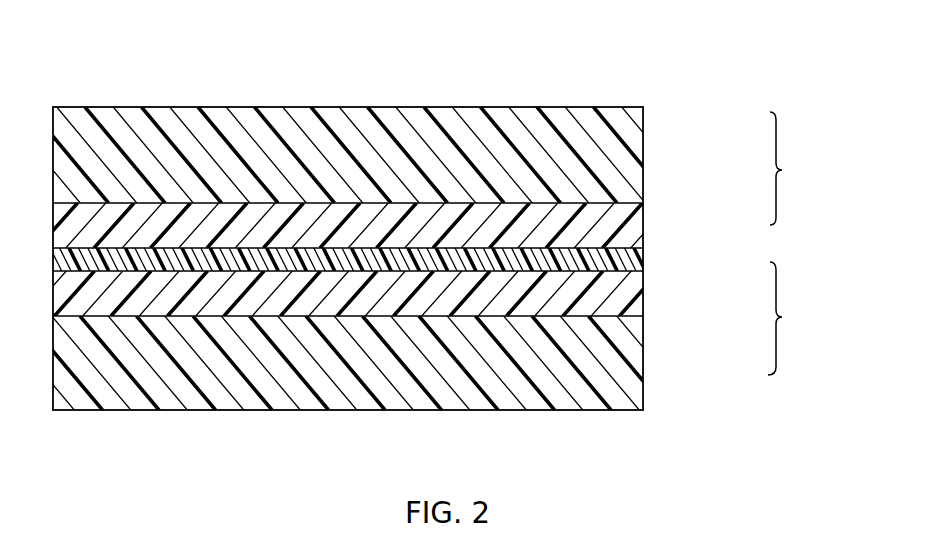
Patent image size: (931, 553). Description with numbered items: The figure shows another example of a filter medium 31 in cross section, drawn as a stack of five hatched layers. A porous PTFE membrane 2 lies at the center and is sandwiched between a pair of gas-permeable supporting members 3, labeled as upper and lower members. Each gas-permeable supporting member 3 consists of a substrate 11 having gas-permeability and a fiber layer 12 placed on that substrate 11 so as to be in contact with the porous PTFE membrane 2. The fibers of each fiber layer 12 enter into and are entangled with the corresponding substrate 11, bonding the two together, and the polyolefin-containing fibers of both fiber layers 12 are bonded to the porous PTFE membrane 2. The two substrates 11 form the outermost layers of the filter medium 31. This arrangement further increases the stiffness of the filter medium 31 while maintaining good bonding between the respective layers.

The filter medium 31 is at (678, 72).
The substrate 11 is at (632, 150).
The fiber layer 12 is at (638, 216).
The porous PTFE membrane 2 is at (640, 258).
The gas-permeable supporting member 3 is at (812, 243).